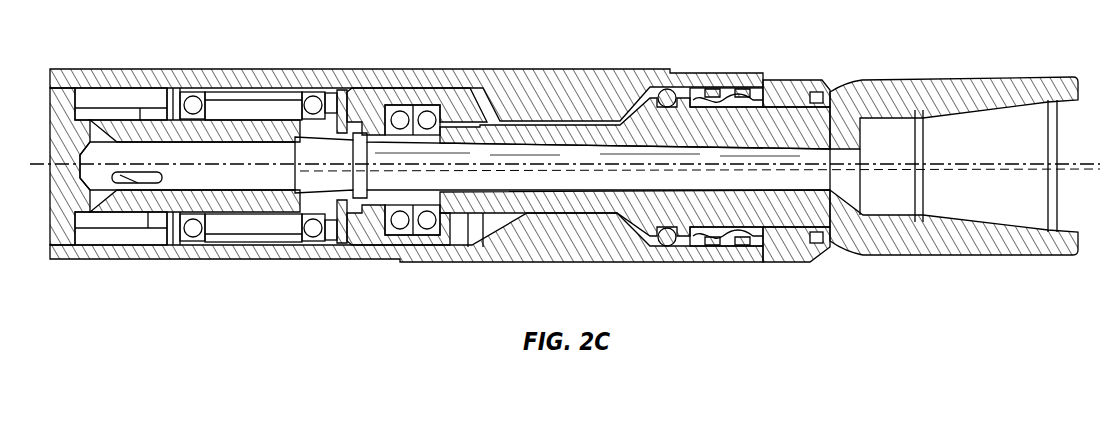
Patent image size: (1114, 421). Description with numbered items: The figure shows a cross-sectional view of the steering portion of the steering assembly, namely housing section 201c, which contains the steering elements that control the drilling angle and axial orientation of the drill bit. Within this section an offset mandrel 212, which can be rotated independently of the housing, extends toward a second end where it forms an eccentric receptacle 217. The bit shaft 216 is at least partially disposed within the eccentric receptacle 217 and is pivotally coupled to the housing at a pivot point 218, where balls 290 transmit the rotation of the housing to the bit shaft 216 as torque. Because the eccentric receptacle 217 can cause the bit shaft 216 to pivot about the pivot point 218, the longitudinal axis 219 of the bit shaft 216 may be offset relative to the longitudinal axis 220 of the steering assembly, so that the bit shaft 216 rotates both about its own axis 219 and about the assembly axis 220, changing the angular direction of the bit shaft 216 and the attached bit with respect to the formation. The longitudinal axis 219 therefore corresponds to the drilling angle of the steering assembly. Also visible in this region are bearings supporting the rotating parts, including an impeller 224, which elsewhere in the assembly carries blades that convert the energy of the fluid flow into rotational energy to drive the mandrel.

The housing section 201c is at (275, 262).
The offset mandrel 212 is at (260, 117).
The bit shaft 216 is at (620, 217).
The eccentric receptacle 217 is at (415, 237).
The pivot point 218 is at (690, 120).
The longitudinal axis of the bit shaft 219 is at (1023, 158).
The longitudinal axis of the steering assembly 220 is at (1028, 168).
The impeller 224 is at (397, 95).
The balls 290 is at (670, 88).